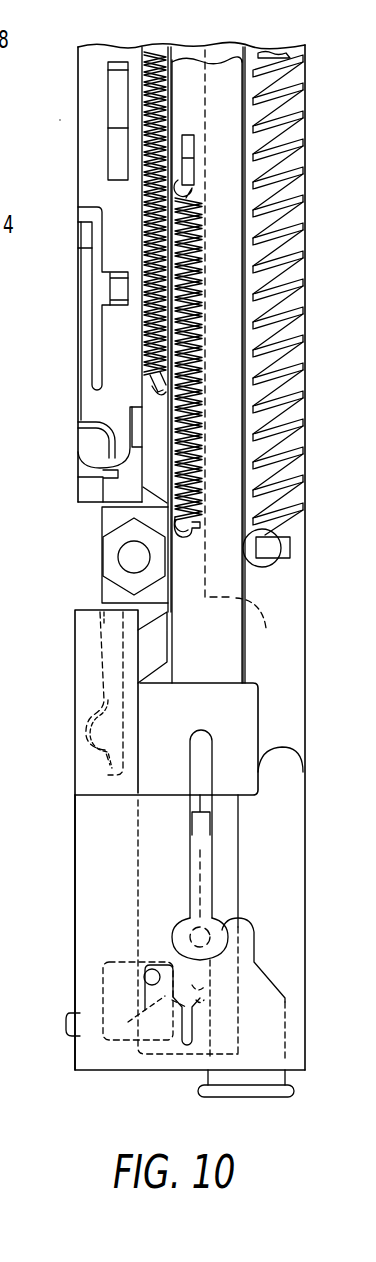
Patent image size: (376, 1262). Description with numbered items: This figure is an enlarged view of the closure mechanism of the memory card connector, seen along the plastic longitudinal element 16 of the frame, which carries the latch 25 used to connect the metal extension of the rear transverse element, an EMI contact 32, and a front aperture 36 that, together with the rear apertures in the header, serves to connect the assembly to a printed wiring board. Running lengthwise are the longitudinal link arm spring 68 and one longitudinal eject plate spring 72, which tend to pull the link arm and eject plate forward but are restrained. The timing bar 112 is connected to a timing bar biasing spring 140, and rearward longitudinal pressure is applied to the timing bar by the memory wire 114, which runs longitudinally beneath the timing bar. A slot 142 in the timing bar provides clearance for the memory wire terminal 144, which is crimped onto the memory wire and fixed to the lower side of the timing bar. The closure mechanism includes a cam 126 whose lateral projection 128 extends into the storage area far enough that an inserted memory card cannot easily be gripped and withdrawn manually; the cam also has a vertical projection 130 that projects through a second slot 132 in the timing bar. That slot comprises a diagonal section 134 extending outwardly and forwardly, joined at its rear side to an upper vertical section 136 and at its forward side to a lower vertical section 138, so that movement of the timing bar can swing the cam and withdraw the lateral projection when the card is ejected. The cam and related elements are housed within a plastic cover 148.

The longitudinal element 16 is at (87, 640).
The latch 25 is at (118, 95).
The EMI contact 32 is at (88, 718).
The front aperture 36 is at (123, 558).
The longitudinal link arm spring 68 is at (292, 70).
The longitudinal eject plate spring 72 is at (152, 56).
The timing bar 112 is at (213, 872).
The memory wire 114 is at (260, 624).
The cam 126 is at (83, 1035).
The lateral projection 128 is at (70, 1020).
The vertical projection 130 is at (145, 978).
The second slot 132 is at (192, 965).
The diagonal section 134 is at (138, 1015).
The upper vertical section 136 is at (140, 935).
The lower vertical section 138 is at (192, 1024).
The timing bar biasing spring 140 is at (195, 204).
The slot 142 is at (202, 897).
The memory wire terminal 144 is at (203, 847).
The plastic cover 148 is at (77, 847).